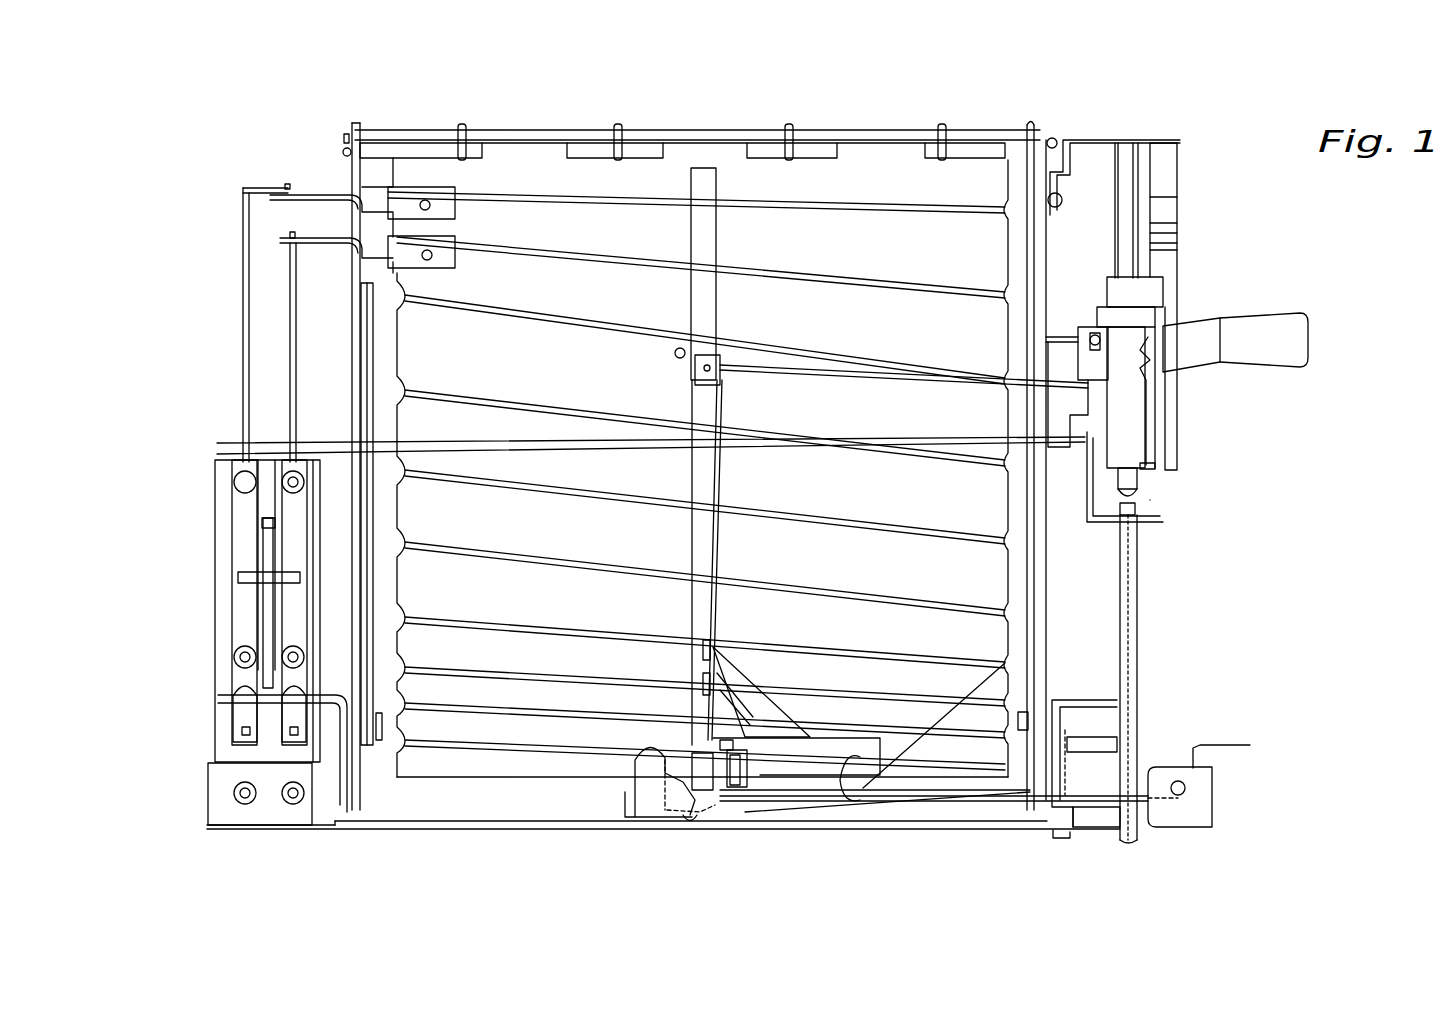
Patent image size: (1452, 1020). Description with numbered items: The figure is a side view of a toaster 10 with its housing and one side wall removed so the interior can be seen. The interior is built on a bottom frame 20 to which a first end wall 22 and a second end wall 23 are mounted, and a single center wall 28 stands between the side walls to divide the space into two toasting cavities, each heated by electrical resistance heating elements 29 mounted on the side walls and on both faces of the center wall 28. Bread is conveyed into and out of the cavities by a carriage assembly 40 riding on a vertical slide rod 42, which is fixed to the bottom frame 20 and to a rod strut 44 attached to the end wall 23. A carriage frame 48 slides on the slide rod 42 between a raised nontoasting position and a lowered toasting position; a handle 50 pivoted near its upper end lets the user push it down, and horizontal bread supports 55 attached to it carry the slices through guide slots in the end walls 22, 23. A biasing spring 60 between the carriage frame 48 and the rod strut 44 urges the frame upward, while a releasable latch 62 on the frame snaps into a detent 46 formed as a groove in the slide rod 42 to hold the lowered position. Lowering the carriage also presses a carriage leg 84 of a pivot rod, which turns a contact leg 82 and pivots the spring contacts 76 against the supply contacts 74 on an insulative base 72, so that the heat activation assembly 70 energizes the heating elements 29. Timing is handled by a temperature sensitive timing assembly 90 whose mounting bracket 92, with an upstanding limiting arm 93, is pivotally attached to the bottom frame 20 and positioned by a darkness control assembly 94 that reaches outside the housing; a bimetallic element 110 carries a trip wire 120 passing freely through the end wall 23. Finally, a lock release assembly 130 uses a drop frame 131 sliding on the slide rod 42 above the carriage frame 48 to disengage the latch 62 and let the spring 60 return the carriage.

The toaster 10 is at (705, 95).
The bottom frame 20 is at (547, 830).
The first end wall 22 is at (352, 180).
The second end wall 23 is at (1062, 167).
The center wall 28 is at (525, 157).
The heating elements 29 is at (900, 207).
The carriage assembly 40 is at (1237, 387).
The slide rod 42 is at (1135, 603).
The rod strut 44 is at (1090, 141).
The detent 46 is at (1142, 497).
The carriage frame 48 is at (1162, 292).
The handle 50 is at (1262, 327).
The bread supports 55 is at (955, 440).
The biasing spring 60 is at (1172, 192).
The releasable latch 62 is at (1157, 444).
The heat activation assembly 70 is at (237, 642).
The electrically insulative base 72 is at (227, 654).
The supply contacts 74 is at (242, 720).
The spring contacts 76 is at (240, 520).
The contact leg 82 is at (215, 702).
The carriage leg 84 is at (1065, 702).
The temperature sensitive timing assembly 90 is at (774, 683).
The mounting bracket 92 is at (785, 802).
The limiting arm 93 is at (750, 778).
The darkness control assembly 94 is at (1205, 820).
The bimetallic element 110 is at (720, 490).
The trip wire 120 is at (813, 385).
The lock release assembly 130 is at (1022, 350).
The drop frame 131 is at (1087, 327).